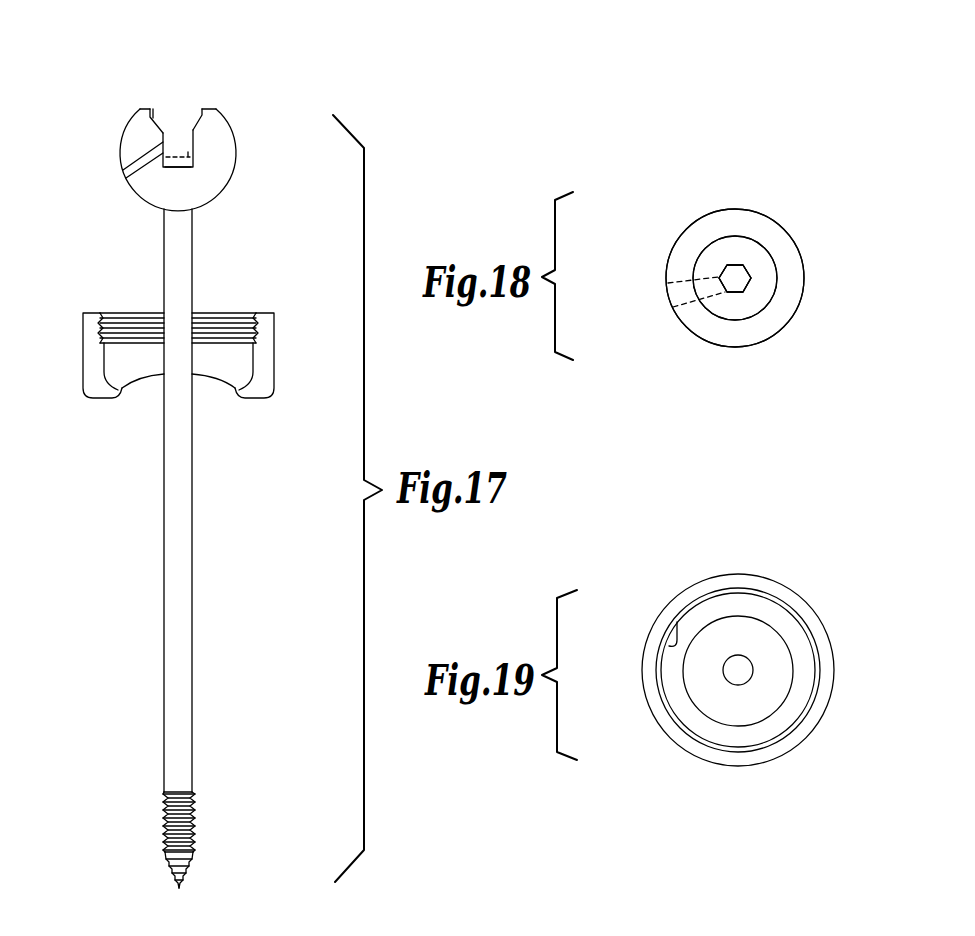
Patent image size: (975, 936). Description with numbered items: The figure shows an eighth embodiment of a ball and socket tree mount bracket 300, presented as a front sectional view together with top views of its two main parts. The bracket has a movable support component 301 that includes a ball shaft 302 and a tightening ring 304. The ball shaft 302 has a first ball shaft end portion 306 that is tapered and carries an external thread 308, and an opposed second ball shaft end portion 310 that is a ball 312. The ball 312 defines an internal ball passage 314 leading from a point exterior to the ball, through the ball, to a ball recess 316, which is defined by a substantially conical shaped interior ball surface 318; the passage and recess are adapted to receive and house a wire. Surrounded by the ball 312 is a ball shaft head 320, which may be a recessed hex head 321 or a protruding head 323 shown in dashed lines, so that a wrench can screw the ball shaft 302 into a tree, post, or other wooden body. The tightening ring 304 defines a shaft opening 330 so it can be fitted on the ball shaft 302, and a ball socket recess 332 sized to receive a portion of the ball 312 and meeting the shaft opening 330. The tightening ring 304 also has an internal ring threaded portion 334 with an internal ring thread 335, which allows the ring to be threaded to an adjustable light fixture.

In FIG. 17, the ball and socket tree mount bracket 300 is at (118, 60).
In FIG. 18, the ball and socket tree mount bracket 300 is at (765, 188).
In FIG. 17, the movable support component 301 is at (266, 410).
In FIG. 17, the ball shaft 302 is at (192, 508).
In FIG. 18, the ball shaft 302 is at (697, 322).
In FIG. 17, the tightening ring 304 is at (276, 368).
In FIG. 19, the tightening ring 304 is at (814, 625).
In FIG. 17, the first ball shaft end portion 306 is at (195, 802).
In FIG. 17, the external thread 308 is at (194, 836).
In FIG. 17, the second ball shaft end portion 310 is at (207, 203).
In FIG. 18, the second ball shaft end portion 310 is at (668, 268).
In FIG. 17, the ball 312 is at (219, 116).
In FIG. 18, the ball 312 is at (677, 236).
In FIG. 17, the internal ball passage 314 is at (125, 172).
In FIG. 18, the internal ball passage 314 is at (666, 298).
In FIG. 17, the ball recess 316 is at (188, 123).
In FIG. 18, the ball recess 316 is at (771, 282).
In FIG. 17, the conical shaped interior ball surface 318 is at (152, 114).
In FIG. 18, the conical shaped interior ball surface 318 is at (712, 253).
In FIG. 17, the ball shaft head 320 is at (195, 163).
In FIG. 18, the ball shaft head 320 is at (741, 265).
In FIG. 17, the recessed hex head 321 is at (175, 152).
In FIG. 18, the recessed hex head 321 is at (729, 265).
In FIG. 17, the protruding head 323 is at (184, 157).
In FIG. 17, the shaft opening 330 is at (210, 365).
In FIG. 19, the shaft opening 330 is at (745, 638).
In FIG. 17, the ball socket recess 332 is at (230, 355).
In FIG. 19, the ball socket recess 332 is at (669, 675).
In FIG. 17, the internal ring threaded portion 334 is at (130, 318).
In FIG. 19, the internal ring threaded portion 334 is at (674, 620).
In FIG. 17, the internal ring thread 335 is at (143, 347).